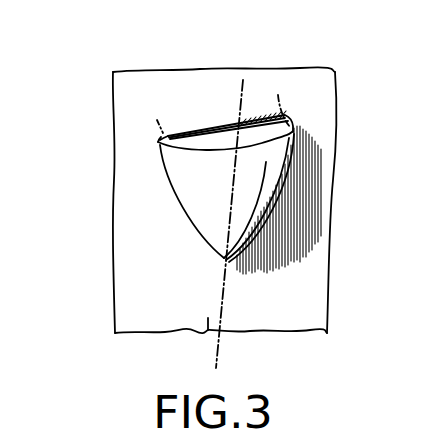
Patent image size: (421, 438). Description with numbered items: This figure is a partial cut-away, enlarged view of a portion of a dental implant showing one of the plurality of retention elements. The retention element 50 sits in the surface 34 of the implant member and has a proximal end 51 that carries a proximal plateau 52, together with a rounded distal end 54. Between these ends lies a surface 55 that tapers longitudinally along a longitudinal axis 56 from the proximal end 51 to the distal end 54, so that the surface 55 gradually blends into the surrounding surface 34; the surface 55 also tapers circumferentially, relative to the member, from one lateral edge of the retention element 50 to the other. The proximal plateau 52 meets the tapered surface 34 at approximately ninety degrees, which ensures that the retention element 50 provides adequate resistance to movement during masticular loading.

The surface 34 is at (315, 310).
The retention element 50 is at (210, 201).
The proximal end 51 is at (294, 130).
The proximal plateau 52 is at (222, 138).
The rounded distal end 54 is at (224, 255).
The surface 55 is at (270, 167).
The longitudinal axis 56 is at (218, 340).